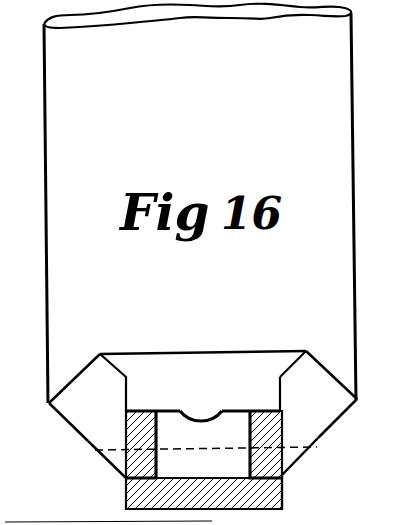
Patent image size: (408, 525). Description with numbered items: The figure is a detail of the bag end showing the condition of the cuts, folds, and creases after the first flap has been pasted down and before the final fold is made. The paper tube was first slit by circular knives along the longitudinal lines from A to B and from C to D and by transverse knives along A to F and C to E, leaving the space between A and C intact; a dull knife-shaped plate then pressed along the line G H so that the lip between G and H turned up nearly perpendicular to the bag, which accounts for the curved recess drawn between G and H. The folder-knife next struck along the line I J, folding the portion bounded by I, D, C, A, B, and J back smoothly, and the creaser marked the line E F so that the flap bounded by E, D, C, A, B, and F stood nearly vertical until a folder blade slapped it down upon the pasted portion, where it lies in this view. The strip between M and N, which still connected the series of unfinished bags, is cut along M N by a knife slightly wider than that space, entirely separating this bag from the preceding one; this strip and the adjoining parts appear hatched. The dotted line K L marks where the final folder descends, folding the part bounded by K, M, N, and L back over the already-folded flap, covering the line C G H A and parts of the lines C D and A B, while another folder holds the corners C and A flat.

The cut point A is at (291, 400).
The cut point B is at (281, 371).
The cut point C is at (142, 412).
The cut point D is at (124, 382).
The crease point E is at (194, 346).
The crease point F is at (331, 363).
The lip line point G is at (199, 404).
The lip line point H is at (246, 399).
The fold line point I is at (60, 397).
The fold line point J is at (345, 412).
The crease line point K is at (191, 459).
The crease line point L is at (309, 453).
The cut line point M is at (247, 462).
The cut line point N is at (293, 495).